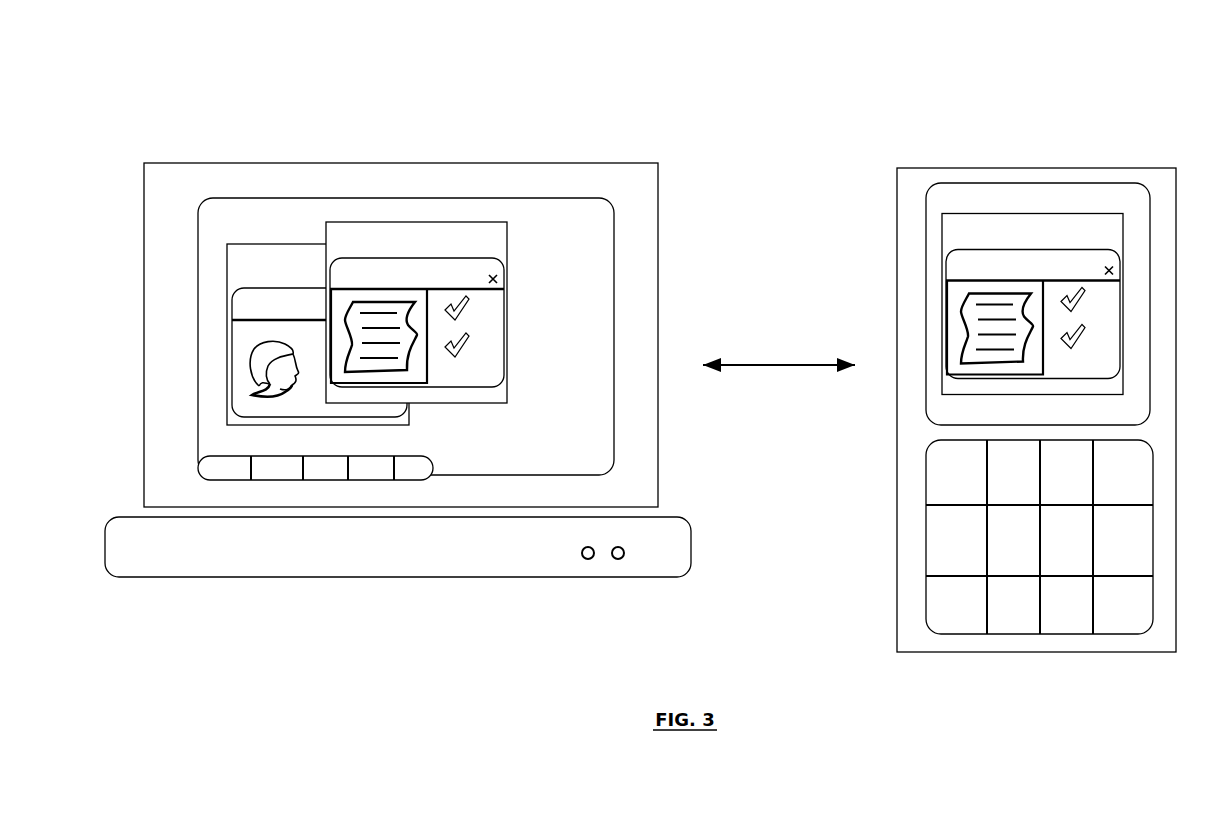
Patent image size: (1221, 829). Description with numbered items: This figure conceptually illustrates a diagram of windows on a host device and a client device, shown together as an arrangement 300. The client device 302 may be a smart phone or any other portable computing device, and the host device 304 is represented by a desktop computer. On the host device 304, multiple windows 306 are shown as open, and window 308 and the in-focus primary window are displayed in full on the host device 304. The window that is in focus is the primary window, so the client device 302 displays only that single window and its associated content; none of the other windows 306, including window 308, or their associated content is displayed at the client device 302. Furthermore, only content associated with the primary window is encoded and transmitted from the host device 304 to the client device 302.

The computing environment 300 is at (427, 85).
The client device 302 is at (896, 606).
The host device 304 is at (673, 515).
The windows 306 is at (436, 470).
The window 308 is at (228, 333).